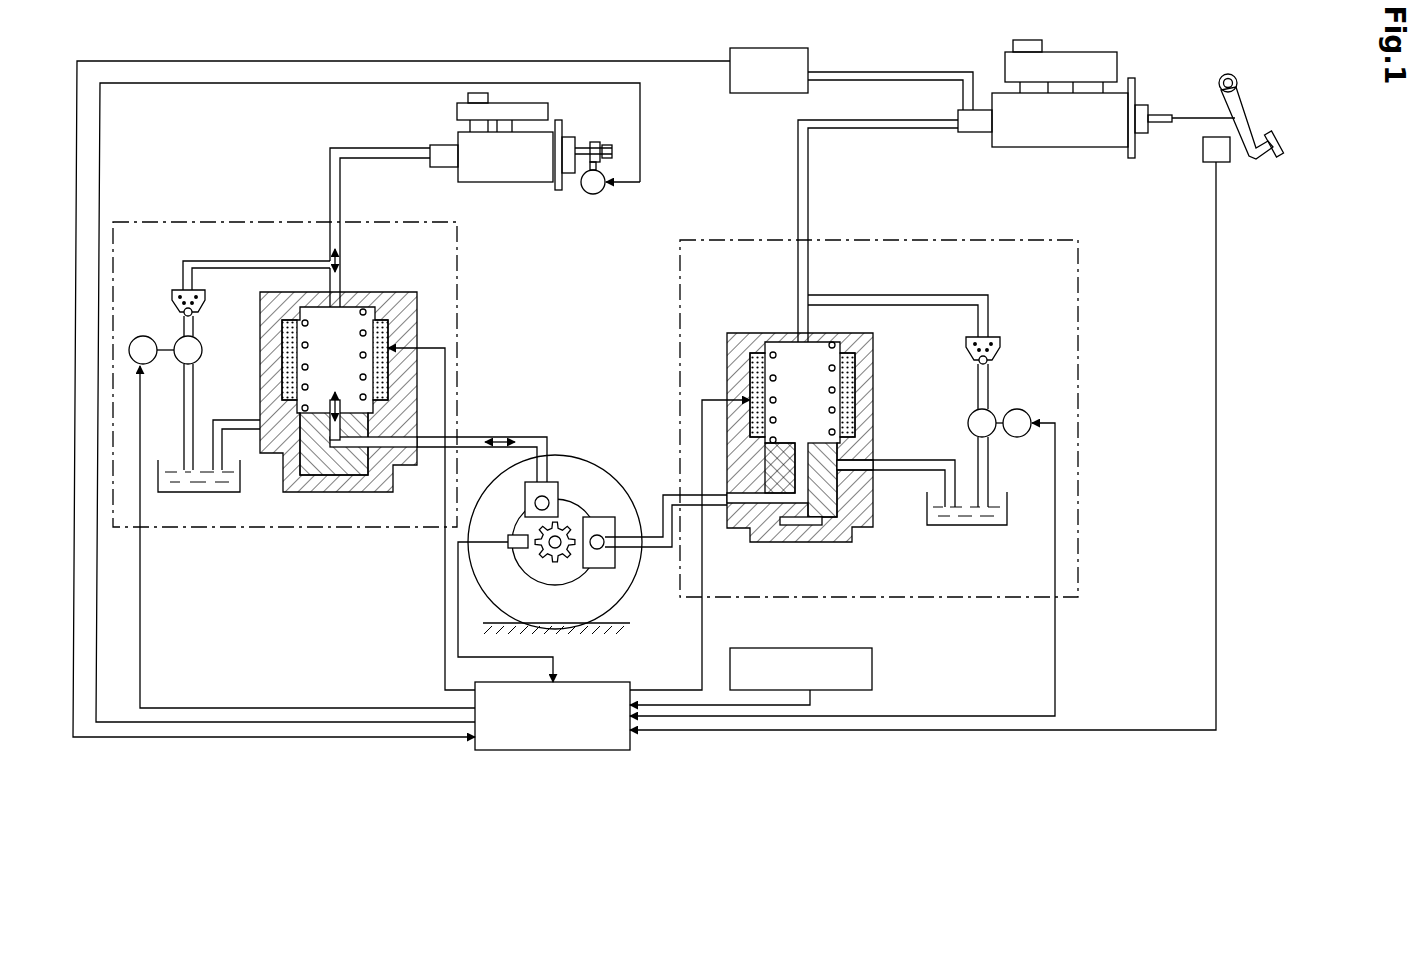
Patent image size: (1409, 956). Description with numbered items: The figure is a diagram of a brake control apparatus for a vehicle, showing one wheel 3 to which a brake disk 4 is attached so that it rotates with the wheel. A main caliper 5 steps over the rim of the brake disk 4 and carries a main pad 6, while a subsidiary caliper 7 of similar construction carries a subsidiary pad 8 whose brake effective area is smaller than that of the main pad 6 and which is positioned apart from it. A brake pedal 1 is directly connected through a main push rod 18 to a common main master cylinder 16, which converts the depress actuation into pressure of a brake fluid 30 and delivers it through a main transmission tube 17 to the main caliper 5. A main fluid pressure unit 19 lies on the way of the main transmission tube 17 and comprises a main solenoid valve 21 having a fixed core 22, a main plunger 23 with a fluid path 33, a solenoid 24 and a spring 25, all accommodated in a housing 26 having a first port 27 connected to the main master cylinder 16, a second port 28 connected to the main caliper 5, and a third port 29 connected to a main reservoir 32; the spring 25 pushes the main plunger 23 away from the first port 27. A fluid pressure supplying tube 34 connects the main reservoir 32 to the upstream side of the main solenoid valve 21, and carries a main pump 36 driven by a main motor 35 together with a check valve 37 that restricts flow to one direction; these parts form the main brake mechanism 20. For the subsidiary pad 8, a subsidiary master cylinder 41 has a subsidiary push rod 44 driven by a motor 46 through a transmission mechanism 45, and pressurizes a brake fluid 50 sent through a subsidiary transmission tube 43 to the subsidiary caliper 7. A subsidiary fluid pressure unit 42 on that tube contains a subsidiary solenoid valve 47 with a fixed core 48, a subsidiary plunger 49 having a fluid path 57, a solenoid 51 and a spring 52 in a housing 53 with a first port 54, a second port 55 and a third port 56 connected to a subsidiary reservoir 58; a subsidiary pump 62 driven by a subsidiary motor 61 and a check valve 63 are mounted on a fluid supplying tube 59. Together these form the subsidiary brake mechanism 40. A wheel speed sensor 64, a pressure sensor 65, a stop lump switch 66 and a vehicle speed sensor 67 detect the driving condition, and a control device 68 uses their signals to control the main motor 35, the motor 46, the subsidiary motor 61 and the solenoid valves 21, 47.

The brake pedal 1 is at (1240, 93).
The wheel 3 is at (598, 600).
The brake disk 4 is at (595, 500).
The main caliper 5 is at (624, 572).
The main pad 6 is at (612, 514).
The subsidiary caliper 7 is at (571, 457).
The subsidiary pad 8 is at (516, 490).
The main master cylinder 16 is at (1062, 148).
The main transmission tube 17 is at (808, 190).
The main push rod 18 is at (1167, 128).
The main fluid pressure unit 19 is at (1080, 348).
The main brake mechanism 20 is at (1090, 222).
The main solenoid valve 21 is at (866, 396).
The fixed core 22 is at (738, 332).
The main plunger 23 is at (801, 530).
The solenoid 24 is at (858, 366).
The spring 25 is at (842, 344).
The housing 26 is at (860, 542).
The first port 27 is at (804, 381).
The second port 28 is at (736, 505).
The third port 29 is at (856, 474).
The brake fluid 30 is at (996, 516).
The main reservoir 32 is at (964, 525).
The fluid path 33 is at (797, 444).
The fluid pressure supplying tube 34 is at (920, 294).
The main motor 35 is at (1014, 408).
The main pump 36 is at (968, 428).
The check valve 37 is at (1003, 348).
The subsidiary brake mechanism 40 is at (490, 239).
The subsidiary master cylinder 41 is at (525, 182).
The subsidiary fluid pressure unit 42 is at (458, 295).
The subsidiary transmission tube 43 is at (330, 187).
The subsidiary push rod 44 is at (604, 142).
The transmission mechanism 45 is at (587, 146).
The motor 46 is at (593, 194).
The subsidiary solenoid valve 47 is at (414, 292).
The fixed core 48 is at (358, 290).
The subsidiary plunger 49 is at (326, 505).
The brake fluid 50 is at (172, 493).
The solenoid 51 is at (388, 333).
The spring 52 is at (306, 308).
The housing 53 is at (396, 480).
The first port 54 is at (332, 347).
The second port 55 is at (456, 437).
The third port 56 is at (264, 438).
The fluid path 57 is at (322, 480).
The subsidiary reservoir 58 is at (216, 493).
The fluid supplying tube 59 is at (240, 261).
The subsidiary motor 61 is at (145, 330).
The subsidiary pump 62 is at (202, 362).
The check valve 63 is at (206, 306).
The wheel speed sensor 64 is at (510, 549).
The pressure sensor 65 is at (808, 55).
The stop lump switch 66 is at (1222, 165).
The vehicle speed sensor 67 is at (872, 665).
The control device 68 is at (630, 680).